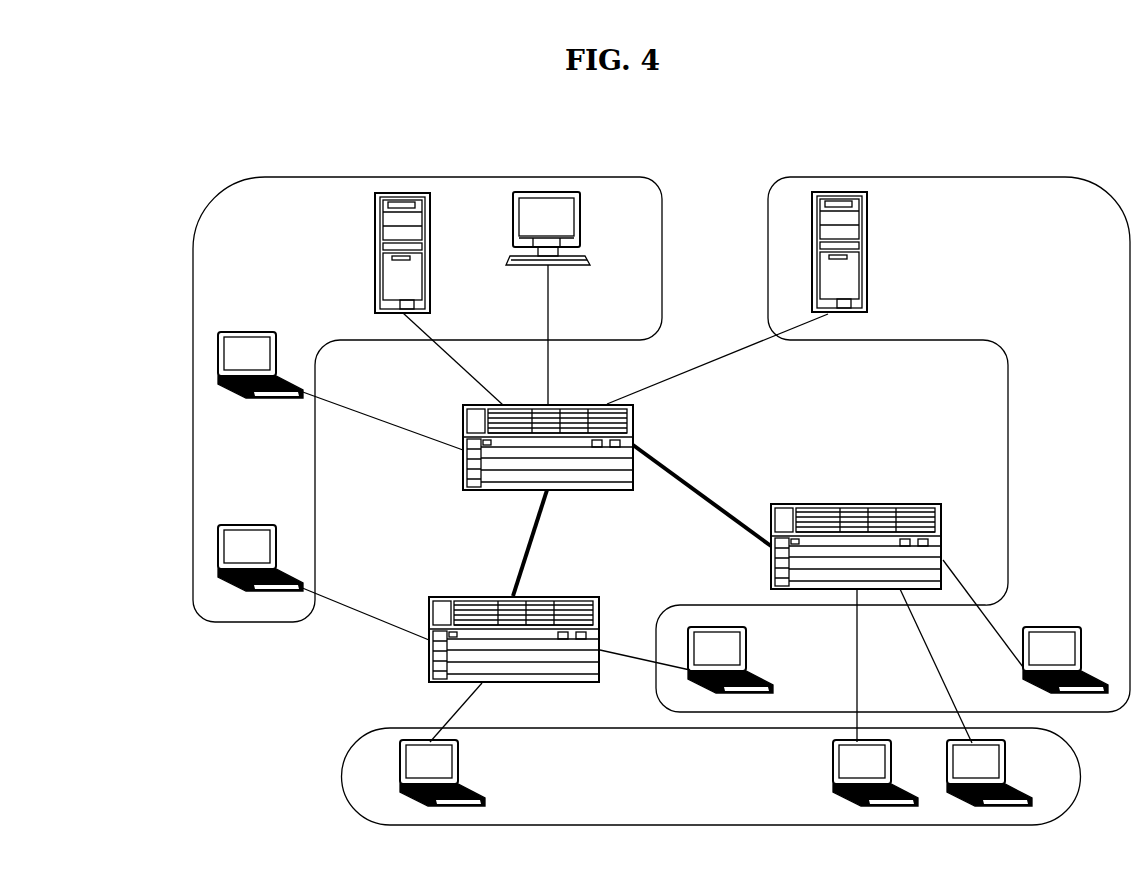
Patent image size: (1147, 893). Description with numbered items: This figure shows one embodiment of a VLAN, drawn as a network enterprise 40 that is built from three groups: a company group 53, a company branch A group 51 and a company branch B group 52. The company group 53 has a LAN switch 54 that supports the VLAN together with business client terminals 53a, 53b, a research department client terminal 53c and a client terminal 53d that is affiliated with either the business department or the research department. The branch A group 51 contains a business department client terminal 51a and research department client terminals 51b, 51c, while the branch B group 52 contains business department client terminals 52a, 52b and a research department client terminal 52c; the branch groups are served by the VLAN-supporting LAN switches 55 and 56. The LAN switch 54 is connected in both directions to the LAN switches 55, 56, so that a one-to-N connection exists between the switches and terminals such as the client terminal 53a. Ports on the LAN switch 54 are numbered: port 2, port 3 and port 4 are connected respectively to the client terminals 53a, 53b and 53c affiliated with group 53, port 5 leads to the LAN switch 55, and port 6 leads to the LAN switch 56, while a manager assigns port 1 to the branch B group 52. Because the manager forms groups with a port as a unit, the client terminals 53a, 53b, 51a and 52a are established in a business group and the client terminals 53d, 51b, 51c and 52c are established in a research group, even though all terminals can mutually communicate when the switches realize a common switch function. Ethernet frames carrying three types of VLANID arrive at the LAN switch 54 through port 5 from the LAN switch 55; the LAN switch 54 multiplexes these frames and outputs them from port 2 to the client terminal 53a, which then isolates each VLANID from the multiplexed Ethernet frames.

The port 1 is at (708, 359).
The port 2 is at (540, 335).
The port 3 is at (453, 359).
The port 4 is at (456, 453).
The port 5 is at (541, 543).
The port 6 is at (702, 487).
The network system 40 is at (263, 736).
The company branch A group 51 is at (1082, 771).
The business department client terminal 51a is at (458, 758).
The research department client terminal 51b is at (837, 757).
The research department client terminal 51c is at (1002, 760).
The company branch B group 52 is at (1008, 393).
The business department client terminal 52a is at (745, 642).
The business department client terminal 52b is at (1042, 626).
The research department client terminal 52c is at (870, 211).
The company group 53 is at (257, 624).
The business client terminal 53a is at (581, 211).
The business client terminal 53b is at (432, 208).
The research department client terminal 53c is at (249, 331).
The client terminal 53d is at (249, 525).
The LAN switch 54 is at (636, 422).
The LAN switch 55 is at (565, 596).
The LAN switch 56 is at (858, 504).